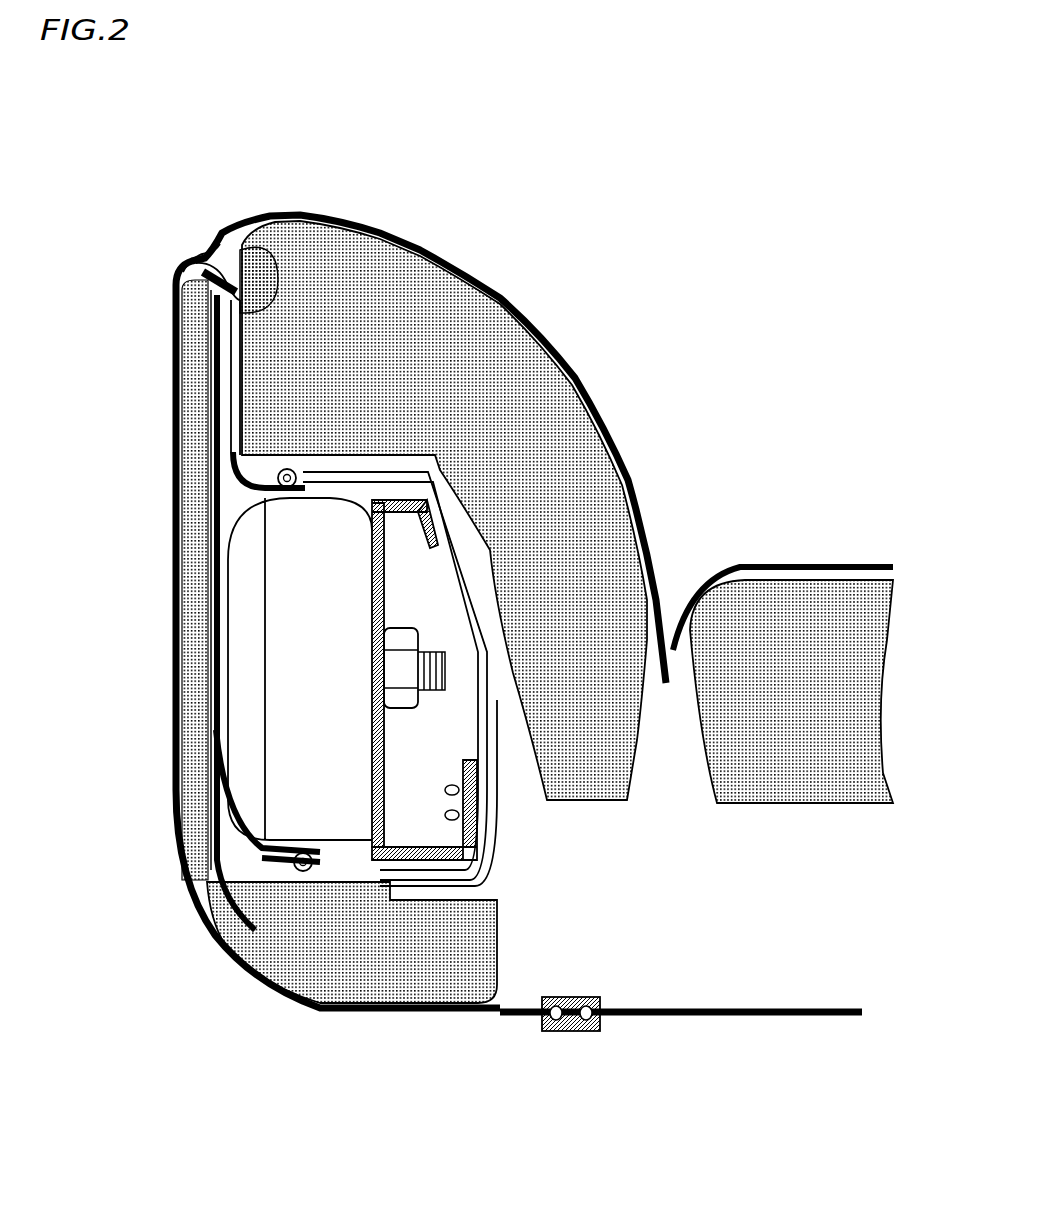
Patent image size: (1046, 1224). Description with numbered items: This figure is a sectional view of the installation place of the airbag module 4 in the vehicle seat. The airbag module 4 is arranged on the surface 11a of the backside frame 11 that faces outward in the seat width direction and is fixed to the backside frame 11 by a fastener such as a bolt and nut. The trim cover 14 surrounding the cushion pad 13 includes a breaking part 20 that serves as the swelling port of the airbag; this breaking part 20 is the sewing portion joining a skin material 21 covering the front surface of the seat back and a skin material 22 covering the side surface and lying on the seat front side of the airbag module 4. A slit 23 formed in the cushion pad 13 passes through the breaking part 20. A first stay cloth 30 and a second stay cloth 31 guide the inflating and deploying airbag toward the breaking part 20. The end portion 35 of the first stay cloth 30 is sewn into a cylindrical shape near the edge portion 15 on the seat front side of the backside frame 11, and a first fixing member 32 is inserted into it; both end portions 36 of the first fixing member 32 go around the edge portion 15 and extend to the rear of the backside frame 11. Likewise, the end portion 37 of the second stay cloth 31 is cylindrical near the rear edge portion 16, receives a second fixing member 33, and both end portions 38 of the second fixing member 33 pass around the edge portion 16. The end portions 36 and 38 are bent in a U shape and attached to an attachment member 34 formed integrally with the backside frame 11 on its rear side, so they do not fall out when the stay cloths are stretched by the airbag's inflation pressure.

The airbag module 4 is at (222, 637).
The backside frame 11 is at (378, 850).
The surface 11a is at (365, 712).
The cushion pad 13 is at (330, 250).
The trim cover 14 is at (505, 284).
The edge portion 15 is at (402, 468).
The edge portion 16 is at (395, 862).
The breaking part 20 is at (200, 255).
The skin material 21 is at (417, 240).
The skin material 22 is at (185, 418).
The slit 23 is at (205, 374).
The first stay cloth 30 is at (273, 313).
The second stay cloth 31 is at (205, 511).
The first fixing member 32 is at (455, 582).
The second fixing member 33 is at (456, 1015).
The attachment member 34 is at (490, 850).
The end portion 35 is at (292, 472).
The end portions 36 is at (493, 790).
The end portion 37 is at (265, 872).
The end portions 38 is at (490, 820).